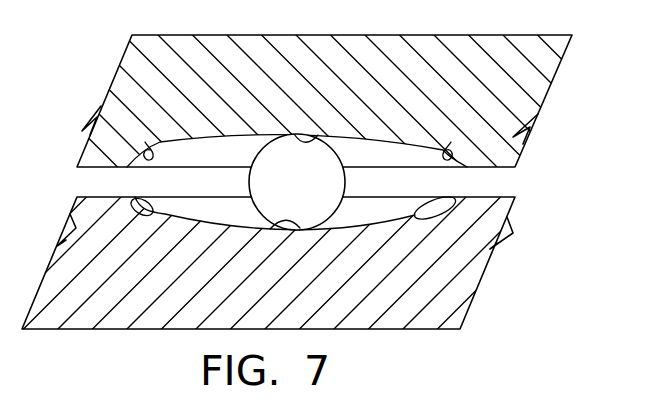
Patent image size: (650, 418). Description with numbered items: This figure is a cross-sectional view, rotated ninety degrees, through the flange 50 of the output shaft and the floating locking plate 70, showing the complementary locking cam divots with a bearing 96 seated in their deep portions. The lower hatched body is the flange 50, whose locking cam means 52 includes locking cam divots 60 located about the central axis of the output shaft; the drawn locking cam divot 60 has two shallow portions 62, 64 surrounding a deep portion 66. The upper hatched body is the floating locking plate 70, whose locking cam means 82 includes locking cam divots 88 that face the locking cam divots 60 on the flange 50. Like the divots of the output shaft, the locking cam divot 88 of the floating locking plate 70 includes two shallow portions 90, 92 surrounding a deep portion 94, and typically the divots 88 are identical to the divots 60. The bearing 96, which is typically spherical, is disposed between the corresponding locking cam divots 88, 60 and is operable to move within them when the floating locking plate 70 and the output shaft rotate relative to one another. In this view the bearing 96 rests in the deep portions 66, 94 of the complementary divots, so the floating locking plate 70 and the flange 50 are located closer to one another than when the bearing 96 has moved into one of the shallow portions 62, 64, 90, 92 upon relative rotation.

The flange 50 is at (285, 260).
The locking cam means 52 is at (208, 231).
The locking cam divots 60 is at (377, 231).
The shallow portion 62 is at (148, 218).
The shallow portion 64 is at (417, 216).
The deep portion 66 is at (275, 229).
The floating locking plate 70 is at (325, 101).
The locking cam means 82 is at (372, 137).
The locking cam divots 88 is at (214, 136).
The shallow portion 90 is at (152, 144).
The shallow portion 92 is at (447, 150).
The deep portion 94 is at (318, 133).
The bearing 96 is at (283, 153).